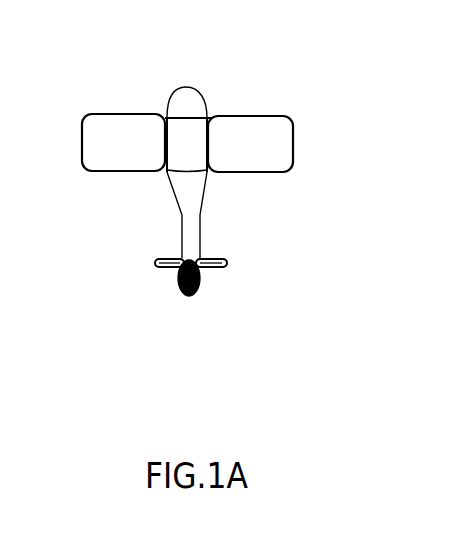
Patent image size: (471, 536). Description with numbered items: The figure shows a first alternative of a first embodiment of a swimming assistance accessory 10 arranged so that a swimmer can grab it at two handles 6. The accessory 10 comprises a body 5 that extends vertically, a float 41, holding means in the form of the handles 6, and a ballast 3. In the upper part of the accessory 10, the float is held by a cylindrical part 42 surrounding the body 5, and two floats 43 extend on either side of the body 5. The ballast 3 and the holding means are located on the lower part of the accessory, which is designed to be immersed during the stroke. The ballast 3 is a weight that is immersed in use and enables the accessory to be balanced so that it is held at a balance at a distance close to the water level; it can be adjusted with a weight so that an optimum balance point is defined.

The swimming assistance accessory 10 is at (197, 190).
The float 41 is at (91, 105).
The cylindrical part 42 is at (190, 138).
The floats 43 is at (97, 152).
The body 5 is at (182, 103).
The handles 6 is at (162, 267).
The ballast 3 is at (197, 293).